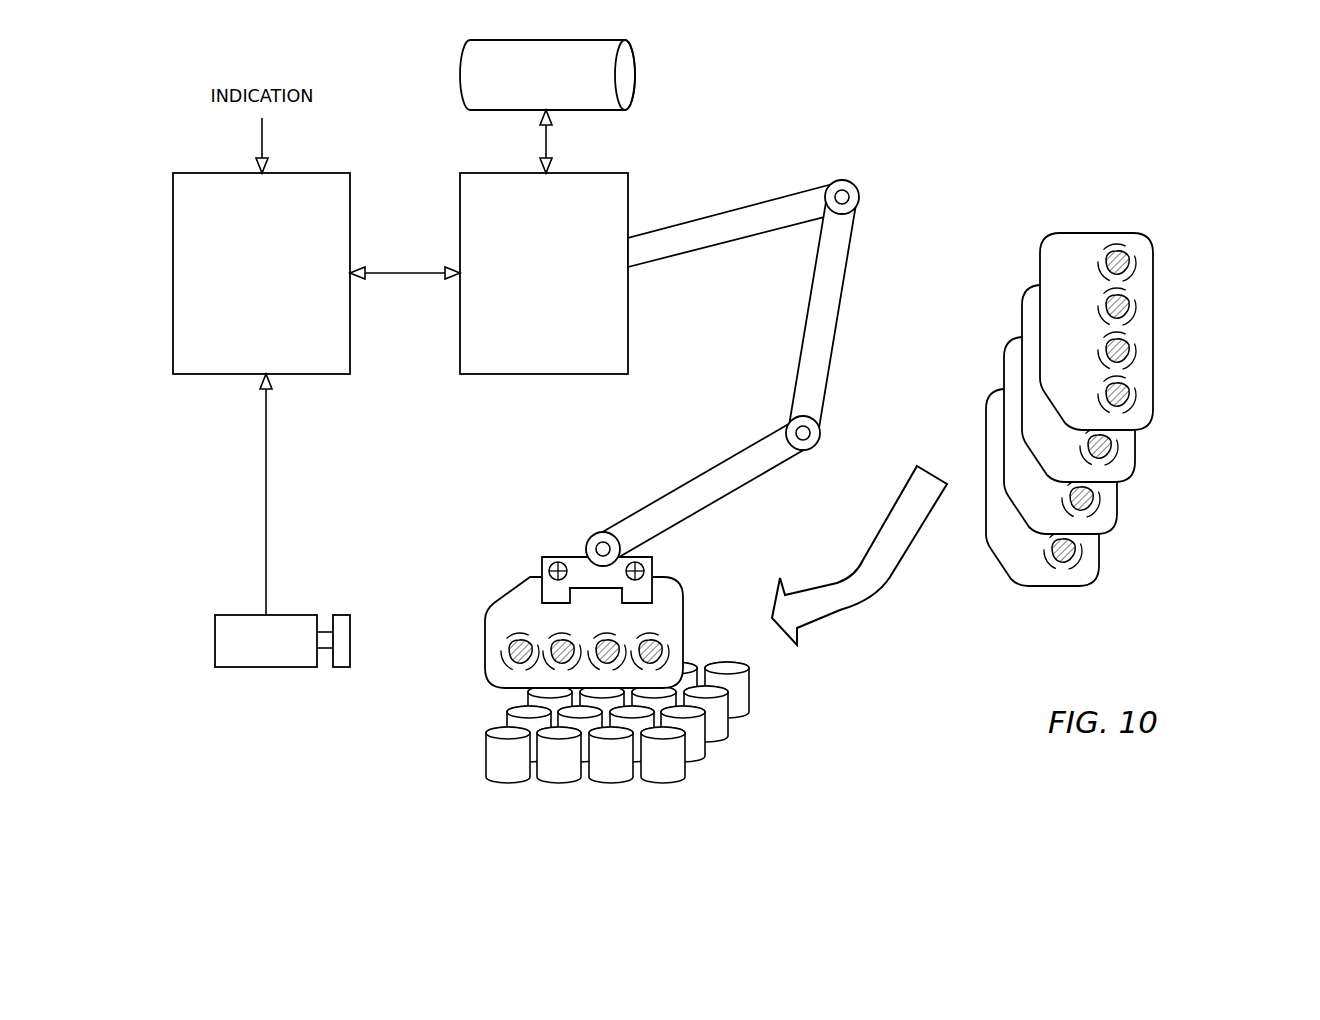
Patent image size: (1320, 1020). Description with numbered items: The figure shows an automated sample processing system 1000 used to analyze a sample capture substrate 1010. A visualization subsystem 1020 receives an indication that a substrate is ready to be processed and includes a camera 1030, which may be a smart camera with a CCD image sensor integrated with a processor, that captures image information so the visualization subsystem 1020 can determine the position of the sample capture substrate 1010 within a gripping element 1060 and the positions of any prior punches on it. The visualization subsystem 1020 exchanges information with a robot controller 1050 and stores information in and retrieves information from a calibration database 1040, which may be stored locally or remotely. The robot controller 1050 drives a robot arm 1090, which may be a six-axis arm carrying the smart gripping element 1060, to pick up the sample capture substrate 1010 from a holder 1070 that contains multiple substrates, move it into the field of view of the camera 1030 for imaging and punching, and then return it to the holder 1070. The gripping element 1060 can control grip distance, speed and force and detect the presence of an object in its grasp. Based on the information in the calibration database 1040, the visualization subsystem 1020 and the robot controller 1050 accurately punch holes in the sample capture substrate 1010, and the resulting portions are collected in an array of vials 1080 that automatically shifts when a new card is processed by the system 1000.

The automated sample processing system 1000 is at (968, 150).
The sample capture substrate 1010 is at (683, 622).
The visualization subsystem 1020 is at (298, 362).
The camera 1030 is at (236, 614).
The calibration database 1040 is at (593, 40).
The robot controller 1050 is at (578, 362).
The gripping element 1060 is at (562, 557).
The holder 1070 is at (1205, 412).
The array of vials 1080 is at (803, 720).
The robot arm 1090 is at (857, 192).